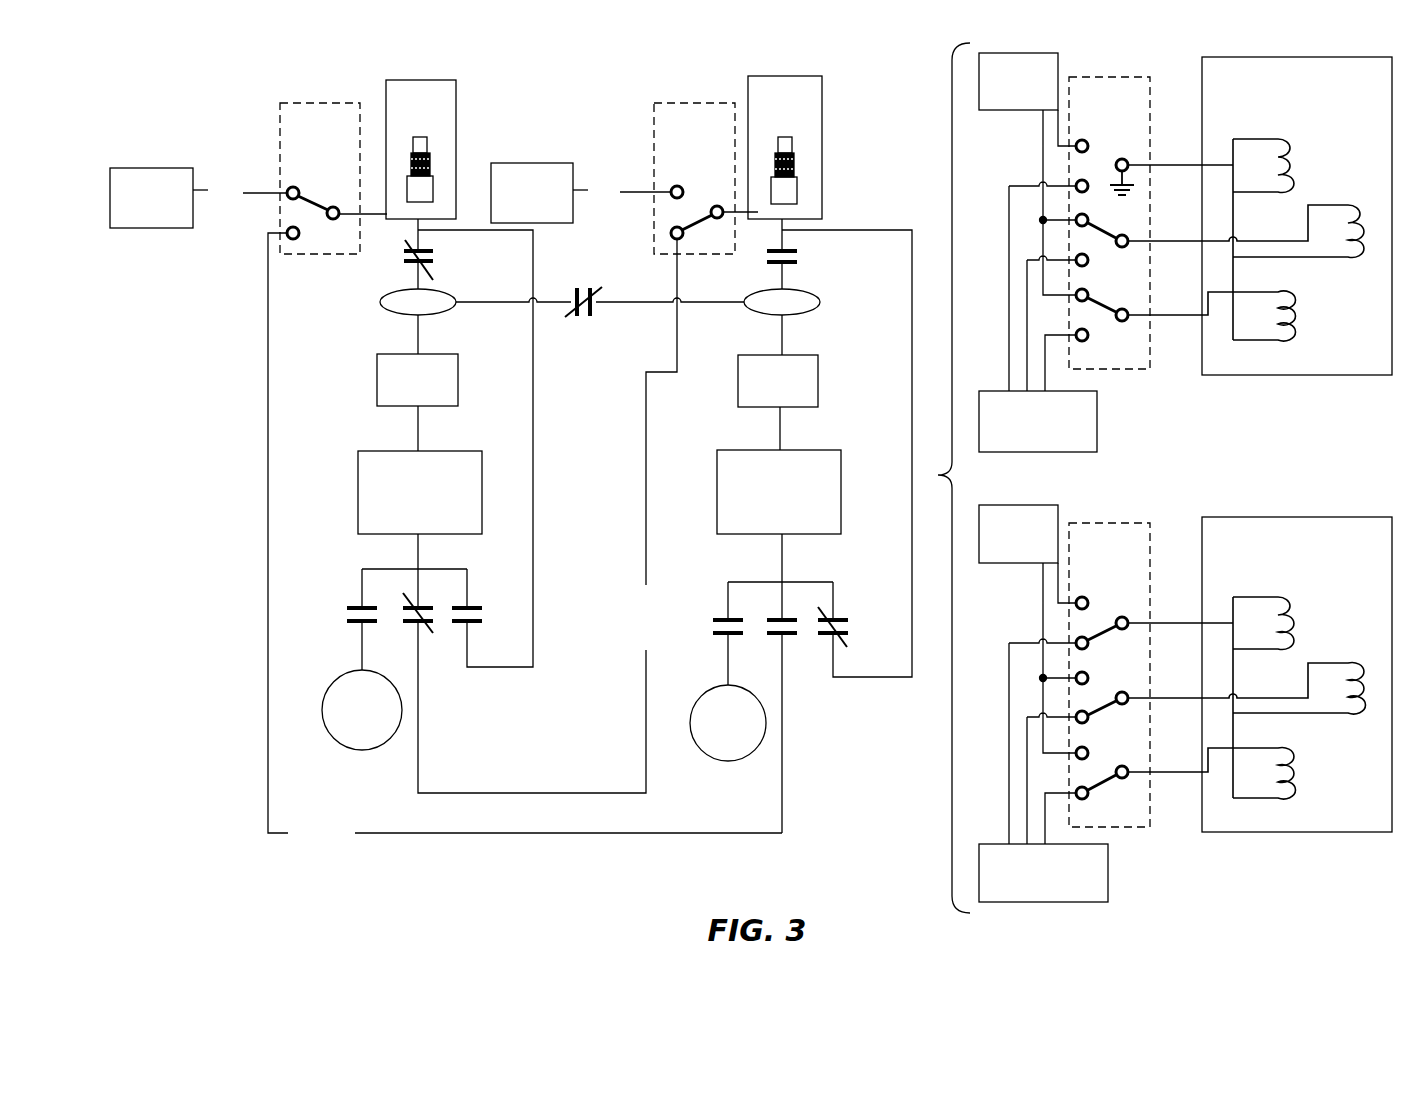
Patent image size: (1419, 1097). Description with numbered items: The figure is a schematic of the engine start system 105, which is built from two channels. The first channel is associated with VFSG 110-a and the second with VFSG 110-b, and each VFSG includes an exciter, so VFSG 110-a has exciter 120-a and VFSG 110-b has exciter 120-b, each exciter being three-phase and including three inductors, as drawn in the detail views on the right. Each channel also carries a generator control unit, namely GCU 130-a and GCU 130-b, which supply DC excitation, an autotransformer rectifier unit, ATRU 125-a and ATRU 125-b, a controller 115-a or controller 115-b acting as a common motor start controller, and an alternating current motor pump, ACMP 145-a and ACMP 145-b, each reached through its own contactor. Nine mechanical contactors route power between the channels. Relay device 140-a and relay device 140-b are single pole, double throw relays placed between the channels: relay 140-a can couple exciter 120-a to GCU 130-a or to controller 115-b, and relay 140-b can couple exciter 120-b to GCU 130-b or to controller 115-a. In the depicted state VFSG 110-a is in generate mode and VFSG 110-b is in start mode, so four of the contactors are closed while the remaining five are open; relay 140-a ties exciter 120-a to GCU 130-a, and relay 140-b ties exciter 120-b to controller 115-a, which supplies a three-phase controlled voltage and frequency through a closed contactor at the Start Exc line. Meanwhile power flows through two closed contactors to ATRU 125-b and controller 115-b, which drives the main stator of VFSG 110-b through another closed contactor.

The engine start system 105 is at (374, 920).
The VFSG 110-a is at (421, 149).
The VFSG 110-b is at (785, 147).
The controller 115-a is at (733, 677).
The controller 115-b is at (907, 462).
The exciter 120-a is at (1260, 216).
The exciter 120-b is at (1260, 674).
The autotransformer rectifier unit 125-a is at (417, 380).
The autotransformer rectifier unit 125-b is at (778, 381).
The generator control unit 130-a is at (584, 140).
The generator control unit 130-b is at (774, 363).
The relay device 140-a is at (715, 223).
The relay device 140-b is at (902, 465).
The alternating current motor pump 145-a is at (362, 710).
The alternating current motor pump 145-b is at (728, 723).